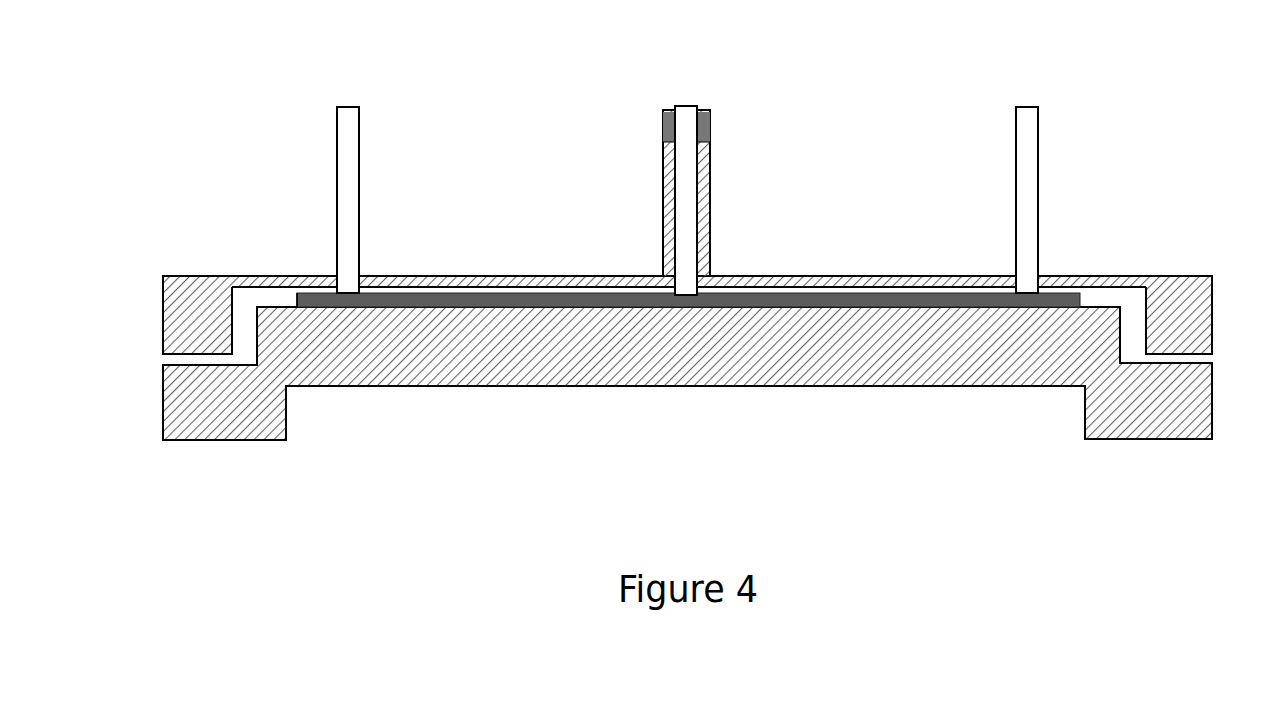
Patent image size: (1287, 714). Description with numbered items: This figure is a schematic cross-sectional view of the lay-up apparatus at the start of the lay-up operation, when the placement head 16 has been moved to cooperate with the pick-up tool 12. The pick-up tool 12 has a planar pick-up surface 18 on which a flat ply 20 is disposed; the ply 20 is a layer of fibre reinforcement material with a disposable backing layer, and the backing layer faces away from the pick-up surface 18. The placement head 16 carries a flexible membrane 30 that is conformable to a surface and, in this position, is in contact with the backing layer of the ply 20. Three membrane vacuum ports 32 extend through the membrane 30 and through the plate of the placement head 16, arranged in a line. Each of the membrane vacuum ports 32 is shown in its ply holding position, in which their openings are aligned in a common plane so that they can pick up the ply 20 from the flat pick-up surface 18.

The pick-up tool 12 is at (935, 362).
The placement head 16 is at (1178, 295).
The pick-up surface 18 is at (290, 304).
The ply 20 is at (482, 297).
The flexible membrane 30 is at (912, 293).
The membrane vacuum ports 32 is at (1023, 170).